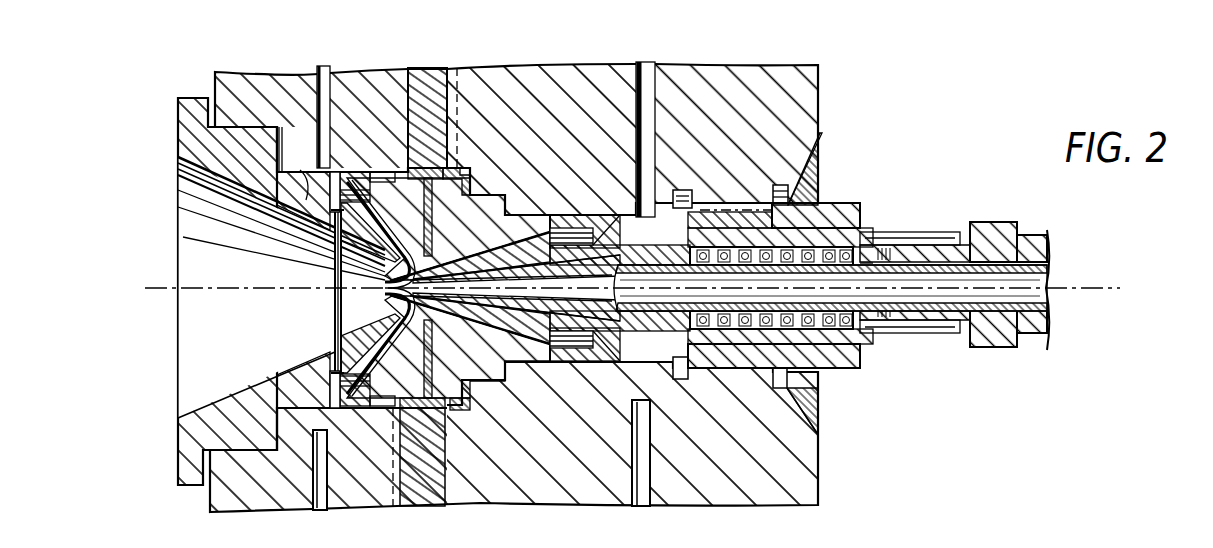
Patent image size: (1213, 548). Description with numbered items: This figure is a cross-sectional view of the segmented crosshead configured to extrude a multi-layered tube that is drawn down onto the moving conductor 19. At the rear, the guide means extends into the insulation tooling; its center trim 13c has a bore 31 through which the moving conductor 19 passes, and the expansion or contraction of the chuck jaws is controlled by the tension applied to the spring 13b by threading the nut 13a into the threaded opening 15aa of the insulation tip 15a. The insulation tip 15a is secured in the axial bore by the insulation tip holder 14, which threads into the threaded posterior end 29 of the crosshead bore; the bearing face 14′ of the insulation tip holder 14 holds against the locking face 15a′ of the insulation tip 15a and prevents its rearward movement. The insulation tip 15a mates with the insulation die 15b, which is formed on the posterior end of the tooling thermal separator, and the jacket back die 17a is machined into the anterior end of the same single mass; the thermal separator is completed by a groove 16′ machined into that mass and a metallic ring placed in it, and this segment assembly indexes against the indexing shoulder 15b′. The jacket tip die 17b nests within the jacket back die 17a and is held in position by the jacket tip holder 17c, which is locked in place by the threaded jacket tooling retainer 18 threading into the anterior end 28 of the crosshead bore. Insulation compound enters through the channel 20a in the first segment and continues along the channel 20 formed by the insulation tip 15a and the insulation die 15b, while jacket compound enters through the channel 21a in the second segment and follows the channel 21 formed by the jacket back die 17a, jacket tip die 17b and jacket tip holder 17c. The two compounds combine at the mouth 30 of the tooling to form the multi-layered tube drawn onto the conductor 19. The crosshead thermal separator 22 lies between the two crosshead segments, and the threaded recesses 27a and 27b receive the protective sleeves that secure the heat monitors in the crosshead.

The nut 13a is at (996, 348).
The spring 13b is at (864, 347).
The center trim 13c is at (630, 314).
The insulation tip holder 14 is at (851, 203).
The bearing face 14′ is at (707, 212).
The insulation tip 15a is at (938, 232).
The locking face 15a′ is at (684, 192).
The threaded opening 15aa is at (918, 340).
The insulation die 15b is at (555, 208).
The indexing shoulder 15b′ is at (510, 366).
The groove 16′ is at (426, 364).
The jacket back die 17a is at (383, 175).
The jacket tip die 17b is at (350, 170).
The jacket tip holder 17c is at (305, 185).
The jacket tooling retainer 18 is at (203, 98).
The moving conductor 19 is at (1086, 284).
The channel 20 is at (626, 216).
The channel 20a is at (647, 70).
The channel 21 is at (316, 192).
The channel 21a is at (325, 72).
The crosshead thermal separator 22 is at (428, 82).
The first threaded recess 27a is at (643, 497).
The threaded recess 27b is at (327, 500).
The anterior end (threaded exit) 28 is at (240, 454).
The posterior end (threaded entrance) 29 is at (752, 208).
The mouth 30 is at (386, 311).
The bore 31 is at (688, 264).